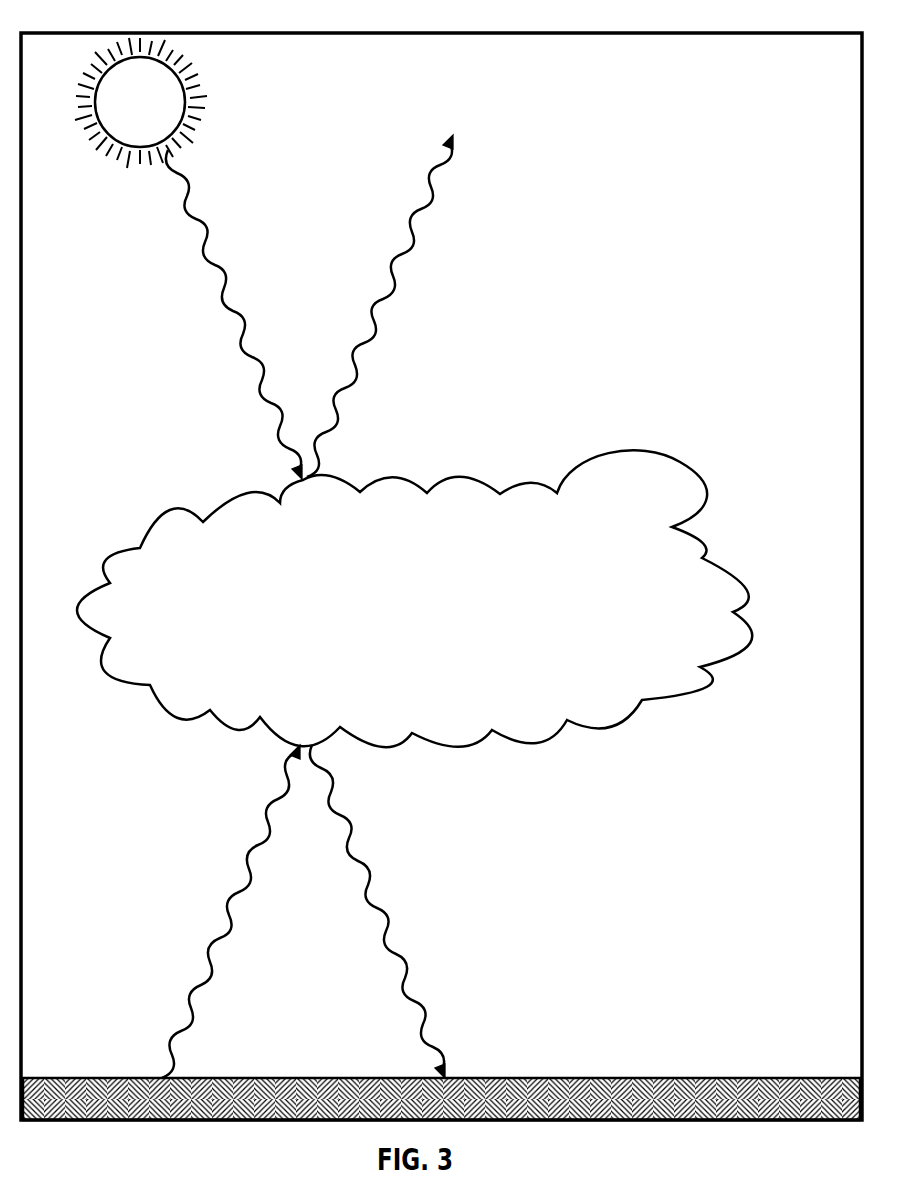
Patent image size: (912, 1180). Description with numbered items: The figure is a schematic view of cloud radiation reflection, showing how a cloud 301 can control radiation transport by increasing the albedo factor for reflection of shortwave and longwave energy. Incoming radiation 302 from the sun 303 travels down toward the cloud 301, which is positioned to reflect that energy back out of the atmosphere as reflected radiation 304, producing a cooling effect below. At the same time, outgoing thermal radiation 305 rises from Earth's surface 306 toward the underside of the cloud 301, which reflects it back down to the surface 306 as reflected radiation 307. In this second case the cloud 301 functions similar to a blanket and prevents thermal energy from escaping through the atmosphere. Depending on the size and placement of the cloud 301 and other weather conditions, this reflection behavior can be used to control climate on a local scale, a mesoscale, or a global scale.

The cloud 301 is at (468, 502).
The incoming radiation 302 is at (220, 303).
The sun 303 is at (168, 90).
The reflected radiation 304 is at (382, 333).
The outgoing thermal radiation 305 is at (227, 917).
The Earth's surface 306 is at (567, 1088).
The reflected radiation 307 is at (393, 922).